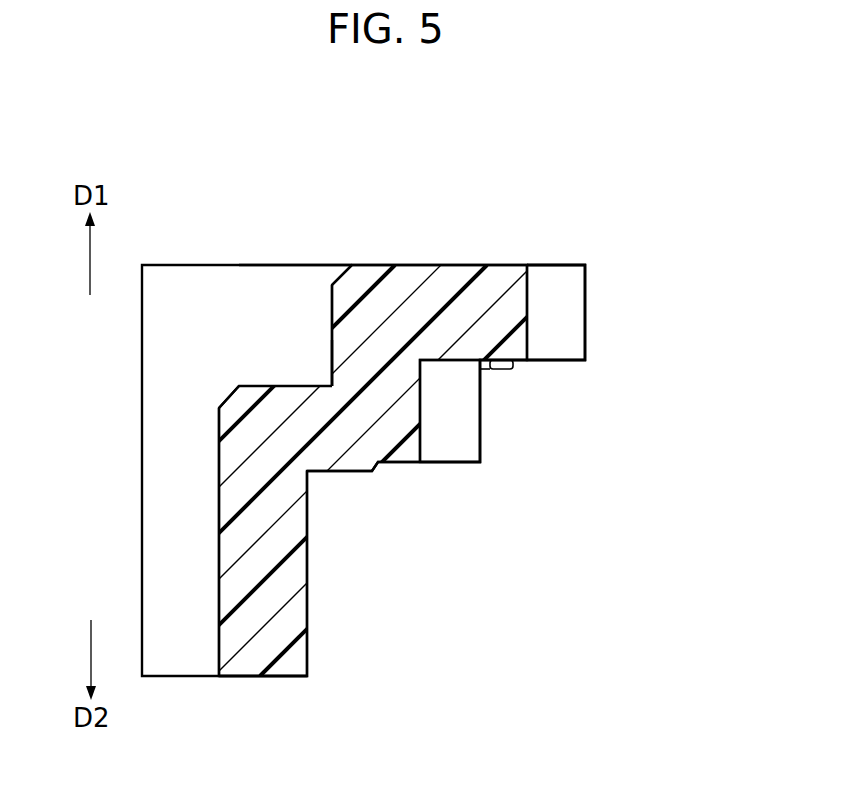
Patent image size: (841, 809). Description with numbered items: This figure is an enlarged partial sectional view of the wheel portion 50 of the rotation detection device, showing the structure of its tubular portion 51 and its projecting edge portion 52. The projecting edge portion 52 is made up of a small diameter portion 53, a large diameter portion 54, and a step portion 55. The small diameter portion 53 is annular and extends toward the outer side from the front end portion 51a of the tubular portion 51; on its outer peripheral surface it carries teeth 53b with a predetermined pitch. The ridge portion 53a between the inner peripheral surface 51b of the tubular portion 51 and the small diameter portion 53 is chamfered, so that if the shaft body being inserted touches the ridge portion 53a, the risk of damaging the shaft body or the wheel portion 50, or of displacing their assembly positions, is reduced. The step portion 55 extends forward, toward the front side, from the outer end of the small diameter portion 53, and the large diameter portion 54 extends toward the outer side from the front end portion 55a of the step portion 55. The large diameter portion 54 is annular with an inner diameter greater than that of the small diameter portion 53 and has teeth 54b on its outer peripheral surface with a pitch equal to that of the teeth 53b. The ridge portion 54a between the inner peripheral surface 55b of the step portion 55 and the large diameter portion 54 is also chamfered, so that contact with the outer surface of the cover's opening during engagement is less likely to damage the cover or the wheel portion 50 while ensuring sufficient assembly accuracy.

The wheel portion 50 is at (503, 245).
The tubular portion 51 is at (283, 602).
The front end portion of the tubular portion 51a is at (195, 439).
The inner peripheral surface of the tubular portion 51b is at (220, 643).
The projecting edge portion 52 is at (663, 264).
The small diameter portion 53 is at (347, 438).
The ridge portion 53a is at (232, 398).
The teeth of the small diameter portion 53b is at (420, 433).
The large diameter portion 54 is at (458, 290).
The ridge portion 54a is at (345, 267).
The teeth of the large diameter portion 54b is at (527, 278).
The step portion 55 is at (372, 340).
The front end portion of the step portion 55a is at (320, 278).
The inner peripheral surface of the step portion 55b is at (332, 372).